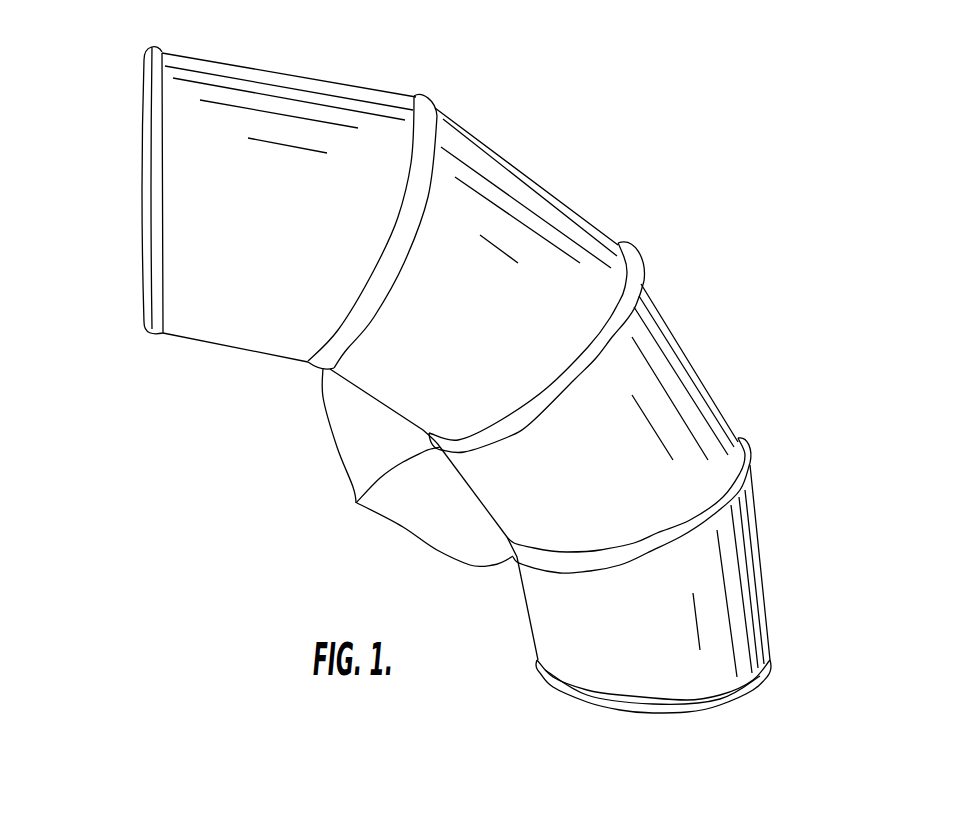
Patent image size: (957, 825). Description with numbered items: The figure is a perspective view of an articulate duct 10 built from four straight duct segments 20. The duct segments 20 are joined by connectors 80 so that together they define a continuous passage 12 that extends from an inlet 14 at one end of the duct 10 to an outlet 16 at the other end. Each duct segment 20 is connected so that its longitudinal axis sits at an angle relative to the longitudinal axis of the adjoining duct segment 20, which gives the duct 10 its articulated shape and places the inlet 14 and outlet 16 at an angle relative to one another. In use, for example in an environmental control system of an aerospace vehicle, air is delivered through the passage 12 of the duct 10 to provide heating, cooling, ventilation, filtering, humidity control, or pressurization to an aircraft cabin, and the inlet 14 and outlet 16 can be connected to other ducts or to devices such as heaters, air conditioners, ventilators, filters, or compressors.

The articulate duct 10 is at (630, 134).
The passage 12 is at (110, 205).
The inlet 14 is at (697, 706).
The outlet 16 is at (138, 140).
The duct segment 20 is at (310, 78).
The connector 80 is at (417, 467).